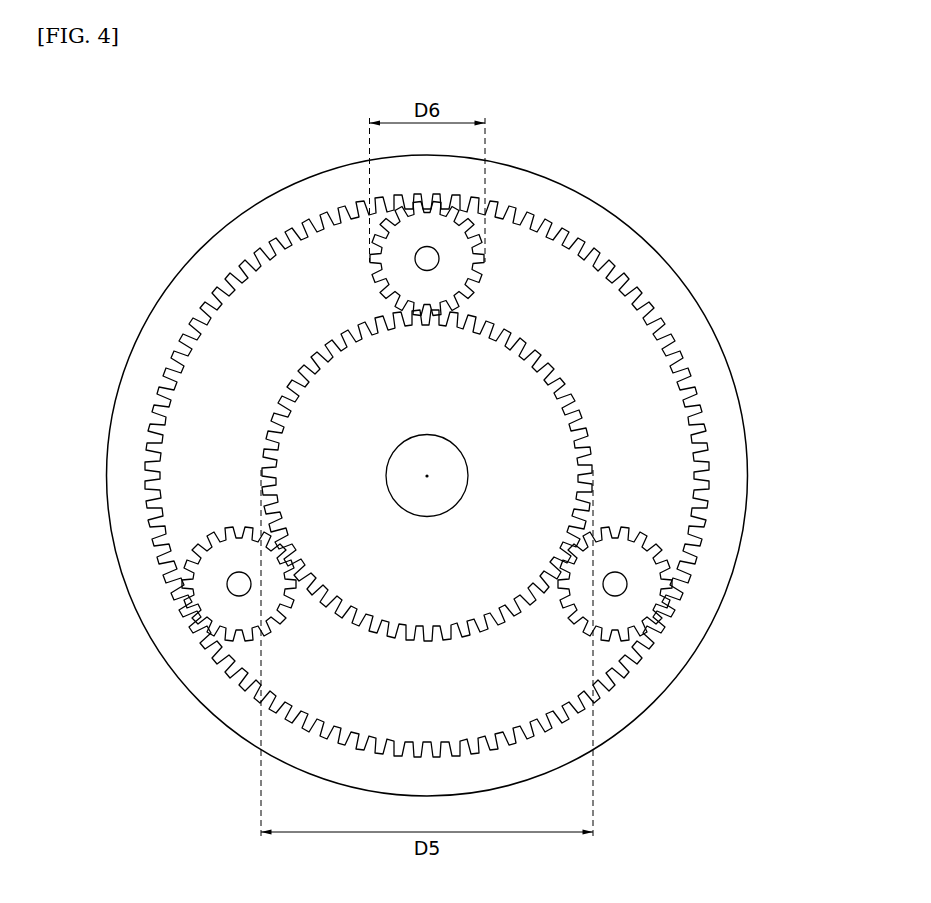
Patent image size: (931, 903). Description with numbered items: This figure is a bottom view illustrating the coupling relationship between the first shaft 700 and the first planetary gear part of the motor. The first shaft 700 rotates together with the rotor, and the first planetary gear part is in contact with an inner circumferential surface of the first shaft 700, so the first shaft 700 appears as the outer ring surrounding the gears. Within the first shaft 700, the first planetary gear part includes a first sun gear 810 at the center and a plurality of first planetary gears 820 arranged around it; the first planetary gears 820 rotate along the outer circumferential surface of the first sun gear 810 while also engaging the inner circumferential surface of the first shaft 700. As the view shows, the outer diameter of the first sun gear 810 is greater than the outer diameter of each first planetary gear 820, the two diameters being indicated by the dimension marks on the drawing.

The first shaft 700 is at (240, 240).
The first sun gear 810 is at (527, 463).
The first planetary gear 820 is at (457, 258).